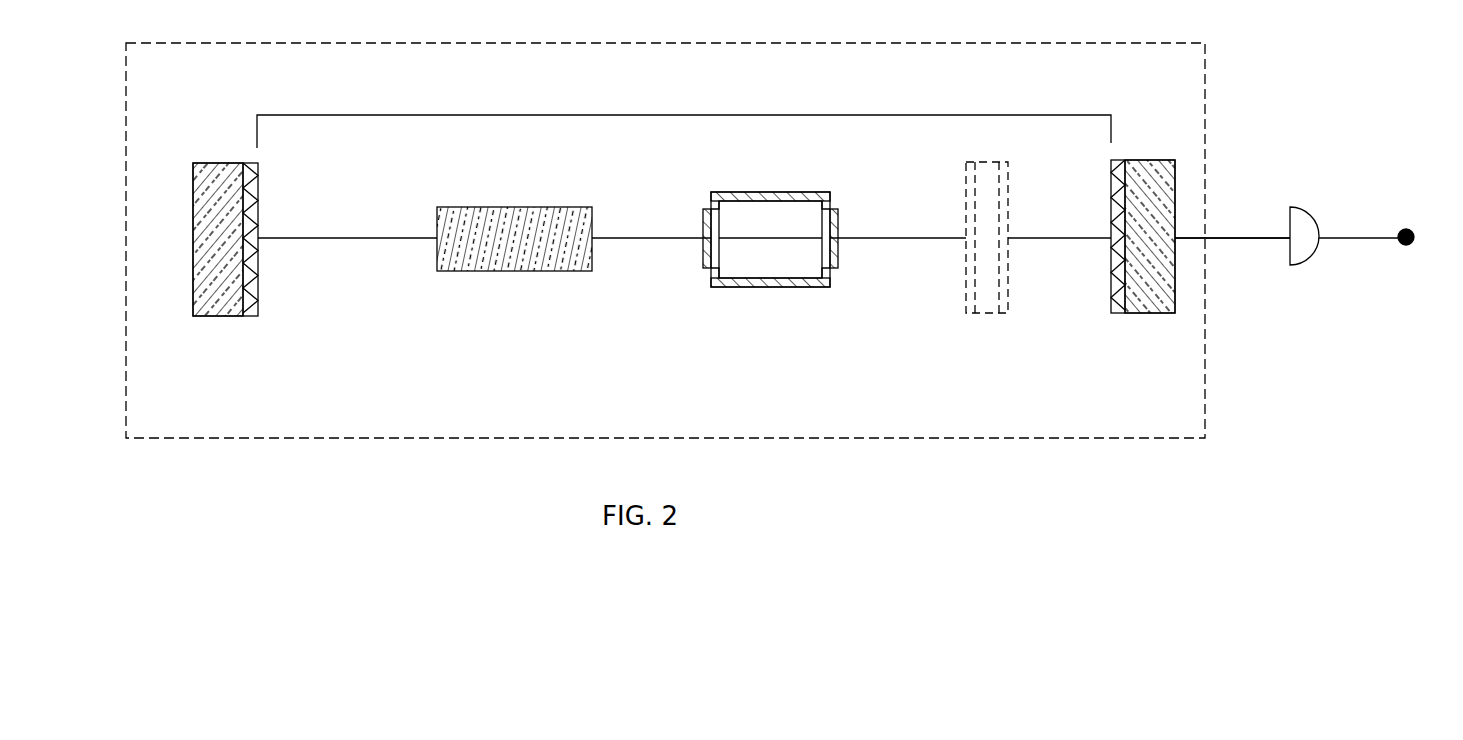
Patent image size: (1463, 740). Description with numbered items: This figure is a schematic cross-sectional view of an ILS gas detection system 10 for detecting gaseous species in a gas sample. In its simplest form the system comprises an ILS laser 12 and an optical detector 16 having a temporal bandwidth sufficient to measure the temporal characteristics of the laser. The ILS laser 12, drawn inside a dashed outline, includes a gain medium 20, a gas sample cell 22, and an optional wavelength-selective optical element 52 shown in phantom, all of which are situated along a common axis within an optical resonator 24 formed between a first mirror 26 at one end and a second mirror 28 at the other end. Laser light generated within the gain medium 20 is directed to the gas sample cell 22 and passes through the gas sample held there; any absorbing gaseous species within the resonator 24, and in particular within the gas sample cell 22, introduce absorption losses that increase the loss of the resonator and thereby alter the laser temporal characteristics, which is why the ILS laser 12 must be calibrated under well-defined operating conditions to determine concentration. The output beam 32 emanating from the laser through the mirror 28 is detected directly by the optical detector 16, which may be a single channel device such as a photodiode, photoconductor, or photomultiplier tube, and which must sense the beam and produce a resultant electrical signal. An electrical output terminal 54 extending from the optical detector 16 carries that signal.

The ILS gas detection system 10 is at (490, 533).
The ILS laser 12 is at (823, 438).
The optical detector 16 is at (1308, 260).
The gain medium 20 is at (500, 272).
The gas sample cell 22 is at (768, 289).
The optical resonator 24 is at (532, 115).
The mirror 26 is at (218, 318).
The mirror 28 is at (1155, 315).
The output beam 32 is at (1240, 236).
The wavelength-selective optical element 52 is at (970, 285).
The electrical output terminal 54 is at (1413, 225).